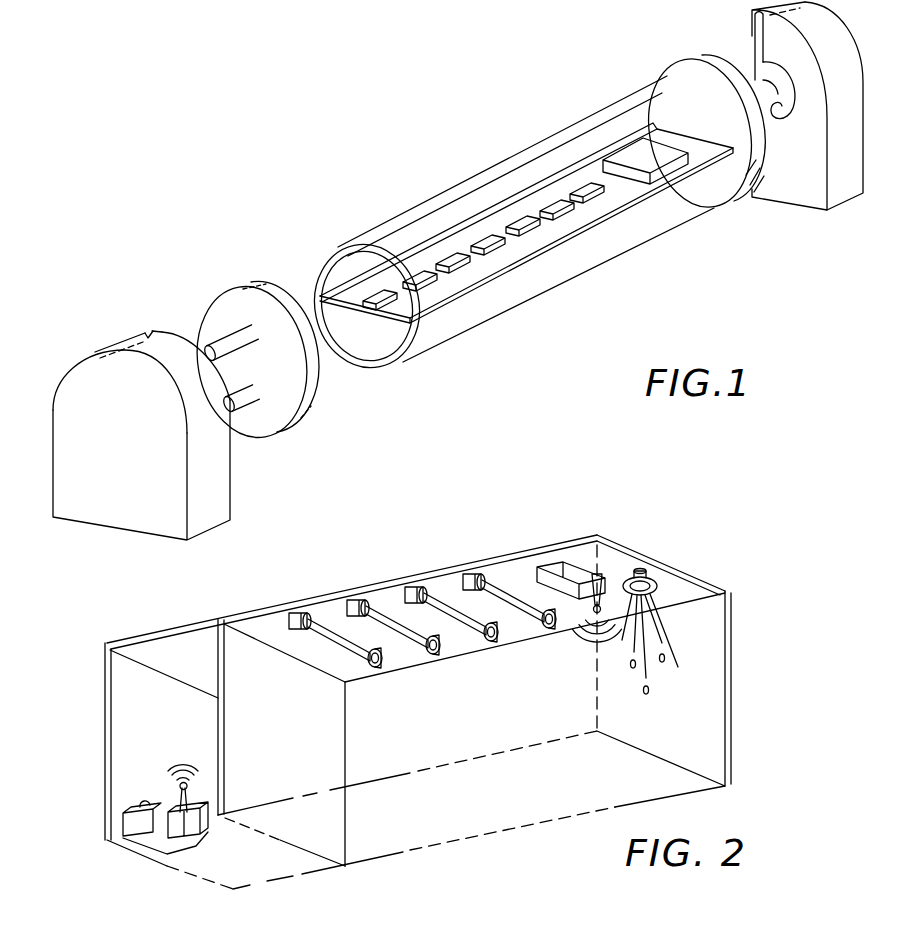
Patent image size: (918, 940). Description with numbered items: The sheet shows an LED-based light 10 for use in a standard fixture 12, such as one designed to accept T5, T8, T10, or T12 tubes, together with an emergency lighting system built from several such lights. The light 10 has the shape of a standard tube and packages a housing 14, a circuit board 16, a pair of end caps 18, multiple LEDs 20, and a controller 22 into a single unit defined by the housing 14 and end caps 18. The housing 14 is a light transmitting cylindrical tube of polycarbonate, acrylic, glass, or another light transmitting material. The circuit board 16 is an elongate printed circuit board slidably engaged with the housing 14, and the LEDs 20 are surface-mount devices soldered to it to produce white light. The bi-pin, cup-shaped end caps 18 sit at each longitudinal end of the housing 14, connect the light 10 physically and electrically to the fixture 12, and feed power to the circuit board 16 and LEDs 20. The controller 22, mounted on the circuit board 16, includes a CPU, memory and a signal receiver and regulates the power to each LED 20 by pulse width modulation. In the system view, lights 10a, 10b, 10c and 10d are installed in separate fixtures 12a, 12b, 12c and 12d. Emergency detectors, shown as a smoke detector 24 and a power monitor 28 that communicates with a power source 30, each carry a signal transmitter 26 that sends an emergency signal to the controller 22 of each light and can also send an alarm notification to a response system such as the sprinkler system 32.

In FIG. 1, the LED-based light 10 is at (338, 186).
In FIG. 1, the standard fixture 12 is at (127, 333).
In FIG. 1, the housing 14 is at (570, 280).
In FIG. 1, the circuit board 16 is at (600, 203).
In FIG. 1, the end caps 18 is at (252, 290).
In FIG. 1, the LEDs 20 is at (488, 245).
In FIG. 1, the controller 22 is at (633, 158).
In FIG. 2, the light 10a is at (330, 651).
In FIG. 2, the light 10b is at (414, 646).
In FIG. 2, the light 10c is at (469, 637).
In FIG. 2, the light 10d is at (537, 622).
In FIG. 2, the fixture 12a is at (297, 613).
In FIG. 2, the fixture 12b is at (352, 600).
In FIG. 2, the fixture 12c is at (412, 587).
In FIG. 2, the fixture 12d is at (470, 574).
In FIG. 2, the smoke detector 24 is at (548, 570).
In FIG. 2, the signal transmitter 26 is at (588, 612).
In FIG. 2, the power monitor 28 is at (203, 827).
In FIG. 2, the power source 30 is at (128, 810).
In FIG. 2, the sprinkler system 32 is at (660, 586).